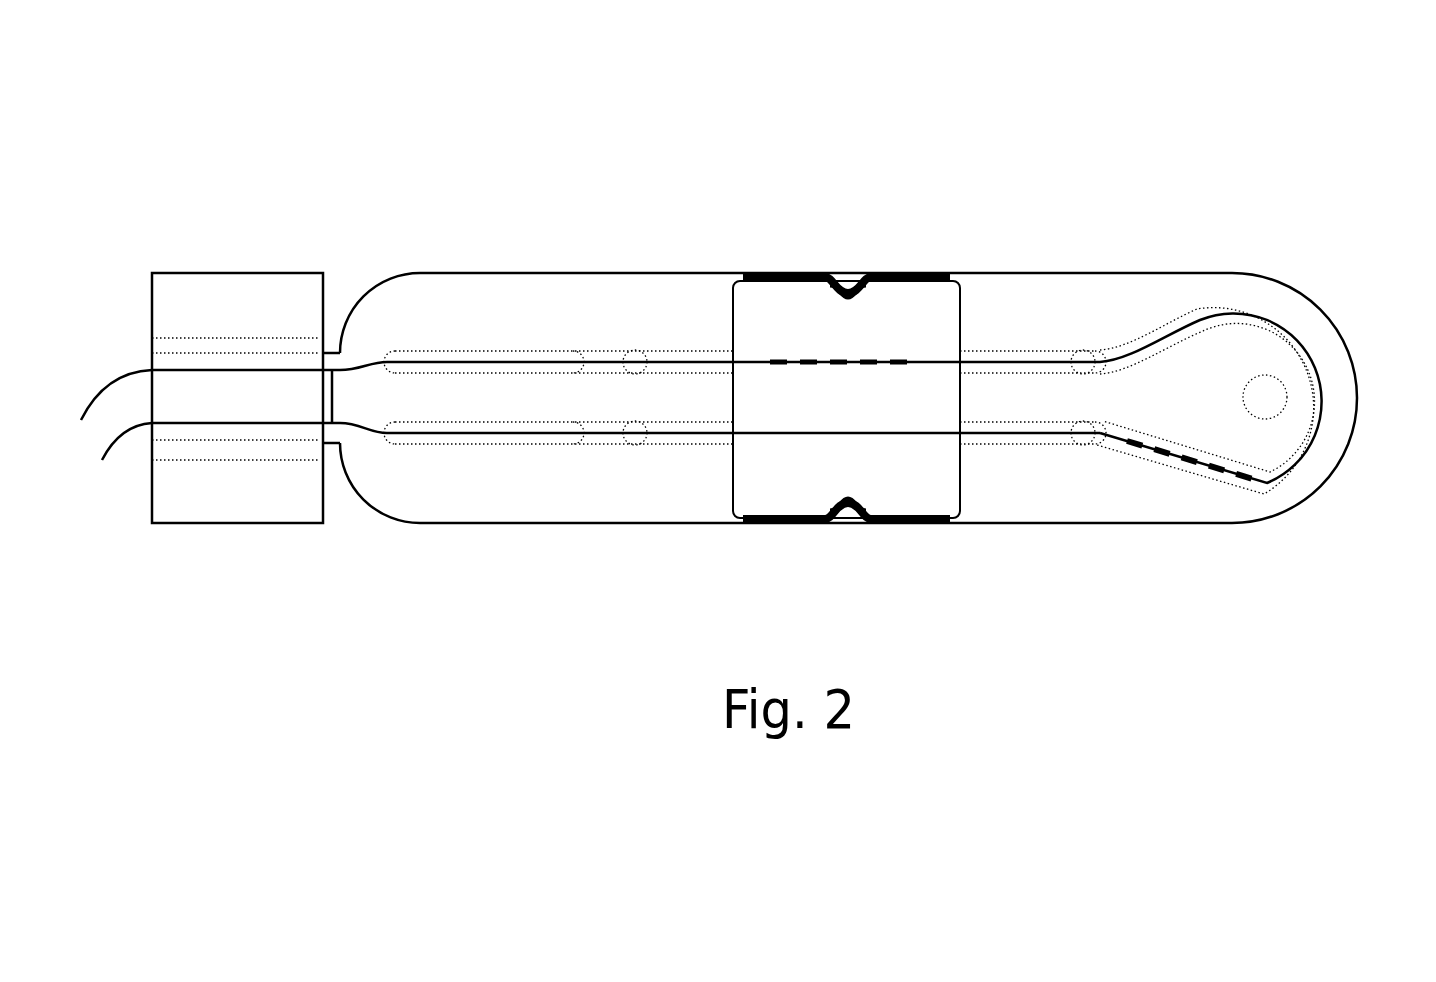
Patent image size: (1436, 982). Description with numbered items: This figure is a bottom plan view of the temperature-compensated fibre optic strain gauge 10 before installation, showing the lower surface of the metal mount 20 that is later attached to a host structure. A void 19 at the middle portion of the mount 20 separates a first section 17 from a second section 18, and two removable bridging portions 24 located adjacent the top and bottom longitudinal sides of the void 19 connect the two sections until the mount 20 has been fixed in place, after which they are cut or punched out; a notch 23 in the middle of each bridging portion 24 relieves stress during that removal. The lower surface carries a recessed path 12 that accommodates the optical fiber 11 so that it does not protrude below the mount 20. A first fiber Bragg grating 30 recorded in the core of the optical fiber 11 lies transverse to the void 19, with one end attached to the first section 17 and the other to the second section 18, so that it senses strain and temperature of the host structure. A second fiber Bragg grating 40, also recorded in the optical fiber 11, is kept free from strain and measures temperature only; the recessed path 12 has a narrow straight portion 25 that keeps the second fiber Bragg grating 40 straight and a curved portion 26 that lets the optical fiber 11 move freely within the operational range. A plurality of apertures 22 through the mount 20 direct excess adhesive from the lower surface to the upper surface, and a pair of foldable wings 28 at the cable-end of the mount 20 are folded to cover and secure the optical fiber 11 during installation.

The temperature-compensated fibre optic strain gauge 10 is at (1183, 153).
The optical fiber 11 is at (1005, 437).
The recessed path 12 is at (1020, 357).
The first section 17 is at (489, 404).
The second section 18 is at (1164, 406).
The void 19 is at (783, 317).
The mount 20 is at (495, 270).
The apertures 22 is at (635, 350).
The notch 23 is at (851, 272).
The bridging portions 24 is at (805, 272).
The narrow straight portion 25 is at (1237, 487).
The curved portion 26 is at (1343, 417).
The foldable wings 28 is at (249, 299).
The first fiber Bragg grating 30 is at (900, 355).
The second fiber Bragg grating 40 is at (1150, 462).